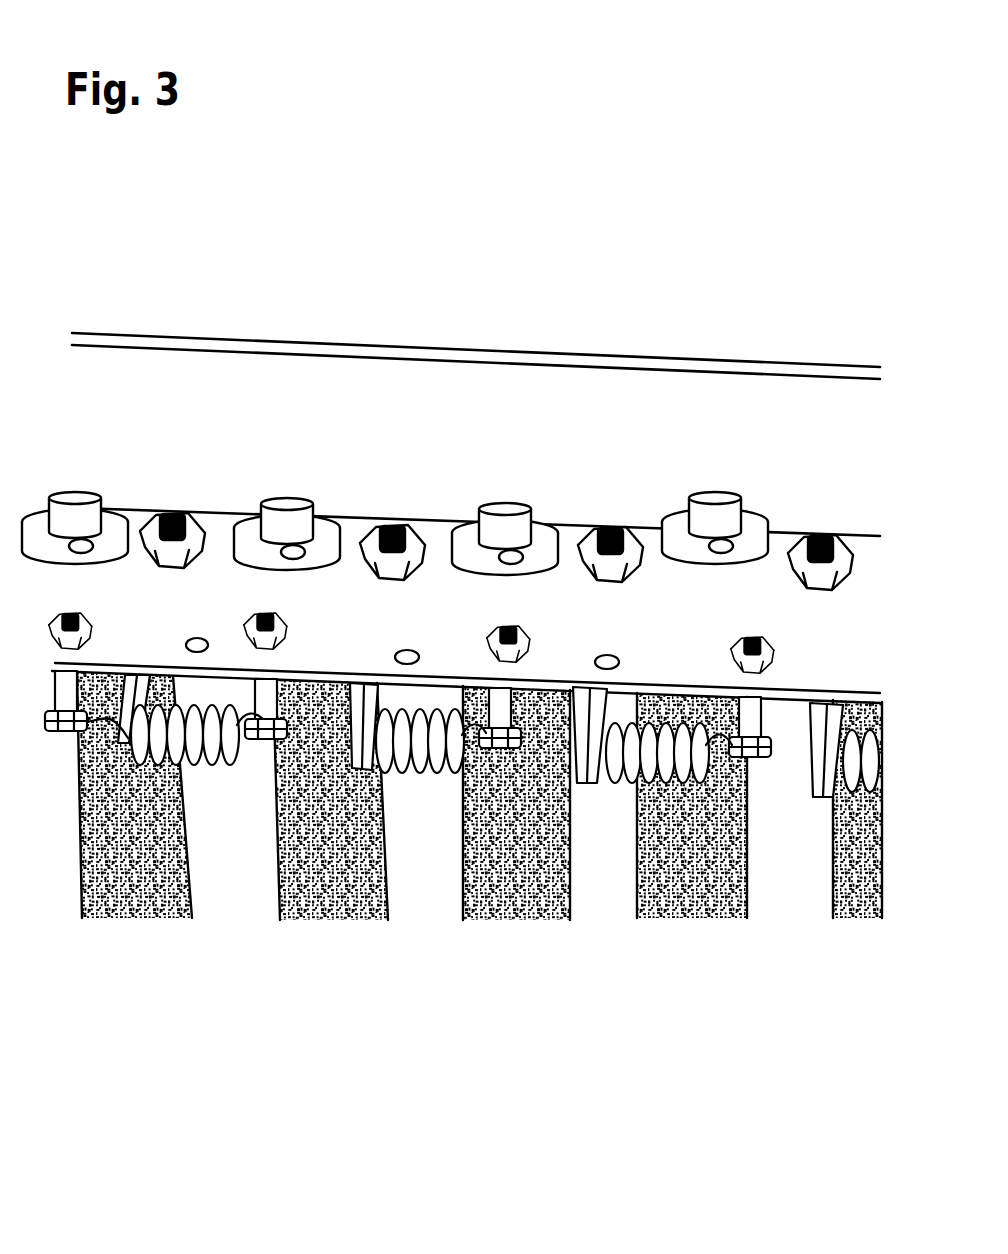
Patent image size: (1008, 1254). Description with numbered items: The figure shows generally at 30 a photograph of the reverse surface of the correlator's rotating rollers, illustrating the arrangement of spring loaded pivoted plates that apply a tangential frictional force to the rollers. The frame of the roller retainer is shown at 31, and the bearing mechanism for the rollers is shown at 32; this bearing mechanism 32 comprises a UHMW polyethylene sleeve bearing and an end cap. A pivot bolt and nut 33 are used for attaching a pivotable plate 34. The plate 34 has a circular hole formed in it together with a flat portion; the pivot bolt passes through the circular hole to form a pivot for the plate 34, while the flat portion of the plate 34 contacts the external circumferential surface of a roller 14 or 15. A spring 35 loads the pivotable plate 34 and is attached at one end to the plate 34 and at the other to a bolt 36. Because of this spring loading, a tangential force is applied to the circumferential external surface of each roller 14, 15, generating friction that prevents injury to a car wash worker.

The reverse surface of the correlator's rotating rollers 30 is at (699, 203).
The frame of the roller retainer 31 is at (780, 583).
The bearing mechanism 32 is at (715, 497).
The pivot bolt and nut 33 is at (605, 527).
The pivotable plate 34 is at (570, 765).
The spring 35 is at (637, 897).
The bolt 36 is at (766, 765).
The roller 14 is at (711, 871).
The roller 15 is at (677, 897).